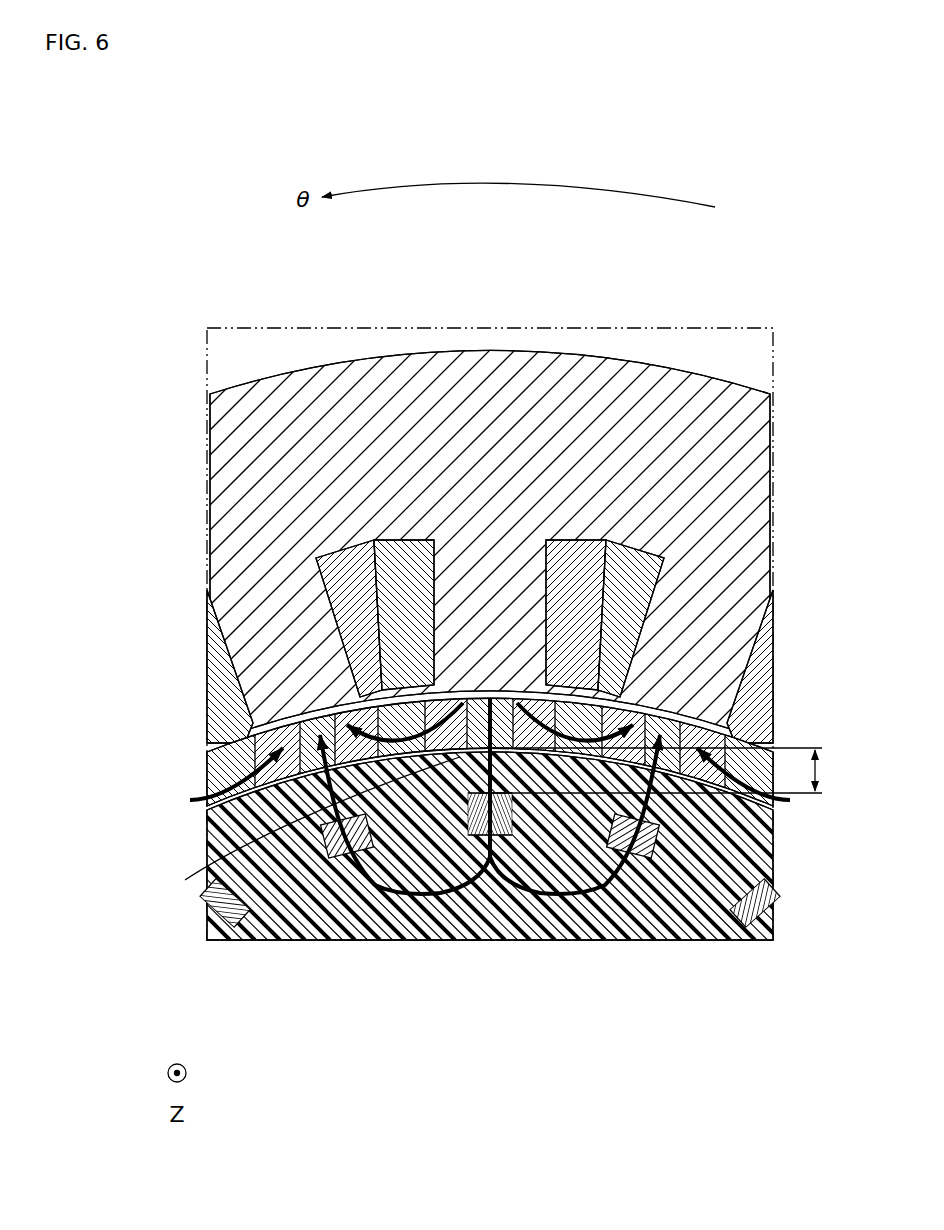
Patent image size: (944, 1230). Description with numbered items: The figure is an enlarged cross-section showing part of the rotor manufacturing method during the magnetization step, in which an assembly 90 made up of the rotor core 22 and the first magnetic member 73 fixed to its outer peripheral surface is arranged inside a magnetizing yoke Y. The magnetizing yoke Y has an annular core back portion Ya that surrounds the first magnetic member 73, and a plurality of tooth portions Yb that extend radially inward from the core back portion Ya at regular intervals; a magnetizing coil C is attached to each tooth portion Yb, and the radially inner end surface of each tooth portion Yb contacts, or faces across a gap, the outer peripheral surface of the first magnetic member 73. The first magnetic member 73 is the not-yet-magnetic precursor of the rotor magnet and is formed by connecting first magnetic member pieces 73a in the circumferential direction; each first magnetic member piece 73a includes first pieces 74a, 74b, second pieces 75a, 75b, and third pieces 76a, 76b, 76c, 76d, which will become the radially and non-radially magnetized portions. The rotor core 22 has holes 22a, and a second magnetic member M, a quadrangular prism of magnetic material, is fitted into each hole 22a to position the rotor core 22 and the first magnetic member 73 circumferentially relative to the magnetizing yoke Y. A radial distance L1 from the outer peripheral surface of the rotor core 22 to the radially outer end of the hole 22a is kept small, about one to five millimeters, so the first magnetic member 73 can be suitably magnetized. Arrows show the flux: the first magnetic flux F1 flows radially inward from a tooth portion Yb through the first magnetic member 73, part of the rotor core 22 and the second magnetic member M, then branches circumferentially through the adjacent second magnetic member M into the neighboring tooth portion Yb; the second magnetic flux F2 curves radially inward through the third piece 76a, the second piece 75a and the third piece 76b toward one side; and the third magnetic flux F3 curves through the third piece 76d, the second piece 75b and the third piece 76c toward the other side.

The magnetizing yoke Y is at (405, 349).
The core back portion Ya is at (647, 385).
The tooth portions Yb is at (290, 628).
The magnetizing coil C is at (350, 552).
The first magnetic flux F1 is at (190, 876).
The second magnetic flux F2 is at (405, 610).
The third magnetic flux F3 is at (697, 600).
The rotor core 22 is at (558, 912).
The hole 22a is at (243, 922).
The second magnetic member M is at (226, 910).
The first magnetic member 73 is at (200, 812).
The first magnetic member piece 73a is at (735, 727).
The first piece 74a is at (537, 708).
The first piece 74b is at (300, 697).
The second piece 75a is at (240, 640).
The second piece 75b is at (220, 755).
The third piece 76a is at (460, 768).
The third piece 76b is at (300, 662).
The third piece 76c is at (235, 727).
The third piece 76d is at (556, 690).
The radial distance L1 is at (665, 770).
The assembly 90 is at (790, 925).